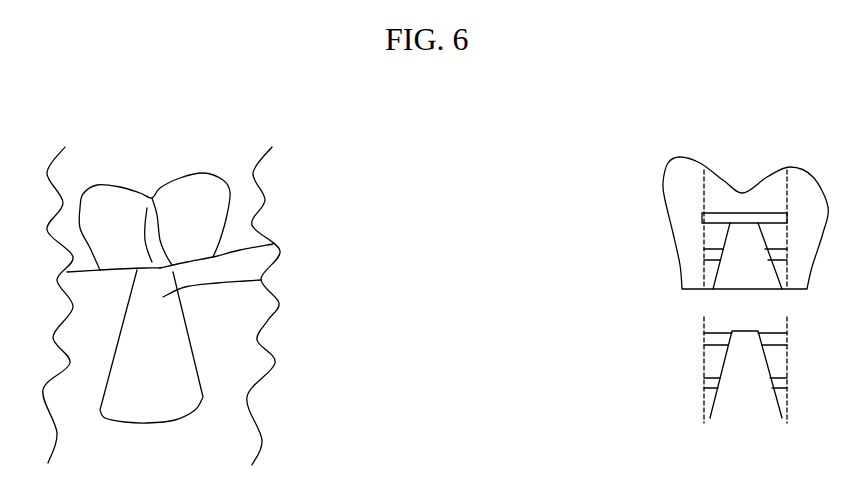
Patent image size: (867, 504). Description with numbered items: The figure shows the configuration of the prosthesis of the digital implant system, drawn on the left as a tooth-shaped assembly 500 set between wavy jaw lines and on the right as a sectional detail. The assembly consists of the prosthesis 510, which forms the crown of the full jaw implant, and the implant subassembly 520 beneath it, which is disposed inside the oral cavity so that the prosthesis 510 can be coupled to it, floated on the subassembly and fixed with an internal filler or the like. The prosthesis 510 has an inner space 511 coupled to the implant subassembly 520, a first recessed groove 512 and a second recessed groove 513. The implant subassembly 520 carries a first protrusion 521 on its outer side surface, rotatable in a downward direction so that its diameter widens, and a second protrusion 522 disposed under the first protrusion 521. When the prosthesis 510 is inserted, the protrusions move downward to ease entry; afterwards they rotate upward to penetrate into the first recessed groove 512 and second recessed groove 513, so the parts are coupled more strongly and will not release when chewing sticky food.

The dental implant prosthesis 500 is at (247, 298).
The prosthesis 510 is at (220, 198).
The implant subassembly 520 is at (227, 346).
The inner space 511 is at (713, 216).
The first recessed groove 512 is at (735, 239).
The second recessed groove 513 is at (705, 254).
The first protrusion 521 is at (704, 340).
The second protrusion 522 is at (704, 381).